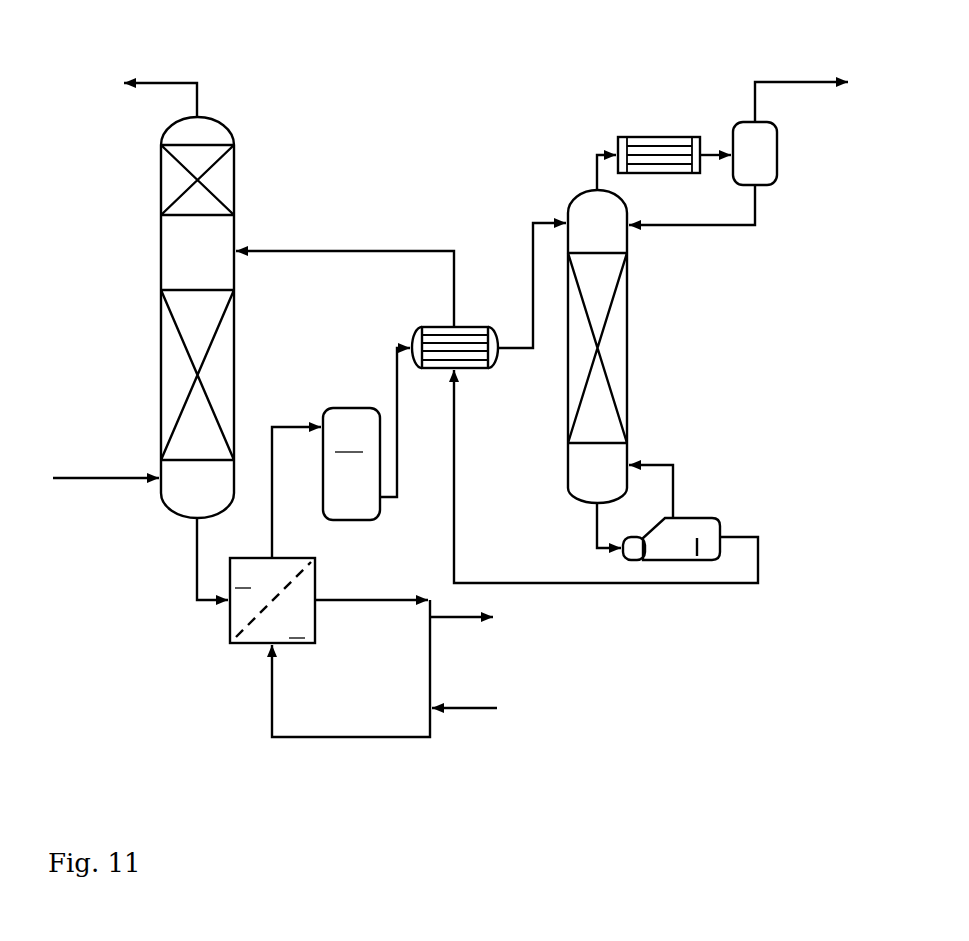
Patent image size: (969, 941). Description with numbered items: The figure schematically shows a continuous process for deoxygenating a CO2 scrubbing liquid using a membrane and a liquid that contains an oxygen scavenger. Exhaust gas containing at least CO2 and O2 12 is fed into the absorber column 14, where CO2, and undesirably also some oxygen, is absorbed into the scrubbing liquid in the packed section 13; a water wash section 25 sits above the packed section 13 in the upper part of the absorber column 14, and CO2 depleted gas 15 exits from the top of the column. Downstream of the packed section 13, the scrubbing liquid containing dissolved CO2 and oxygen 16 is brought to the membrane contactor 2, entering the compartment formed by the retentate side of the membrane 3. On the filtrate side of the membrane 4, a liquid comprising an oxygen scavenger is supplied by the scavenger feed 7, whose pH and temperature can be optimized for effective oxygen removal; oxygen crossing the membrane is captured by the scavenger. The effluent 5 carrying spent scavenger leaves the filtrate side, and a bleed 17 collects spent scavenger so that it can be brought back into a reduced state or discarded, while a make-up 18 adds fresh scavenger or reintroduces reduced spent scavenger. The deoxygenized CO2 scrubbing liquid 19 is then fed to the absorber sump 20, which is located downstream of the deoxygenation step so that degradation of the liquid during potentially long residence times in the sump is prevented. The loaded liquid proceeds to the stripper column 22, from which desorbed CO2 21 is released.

The membrane contactor 2 is at (253, 634).
The retentate side of the membrane 3 is at (273, 598).
The filtrate side of the membrane 4 is at (240, 640).
The effluent 5 is at (332, 598).
The scavenger feed 7 is at (313, 737).
The exhaust gas containing CO2 and O2 12 is at (112, 480).
The packed section 13 is at (225, 378).
The absorber column 14 is at (160, 245).
The CO2 depleted gas 15 is at (160, 78).
The scrubbing liquid containing dissolved CO2 and oxygen 16 is at (197, 585).
The bleed 17 is at (468, 618).
The make-up 18 is at (465, 708).
The deoxygenized CO2 scrubbing liquid 19 is at (275, 443).
The absorber sump 20 is at (366, 434).
The desorbed CO2 21 is at (795, 82).
The stripper column 22 is at (630, 242).
The water wash section 25 is at (223, 185).